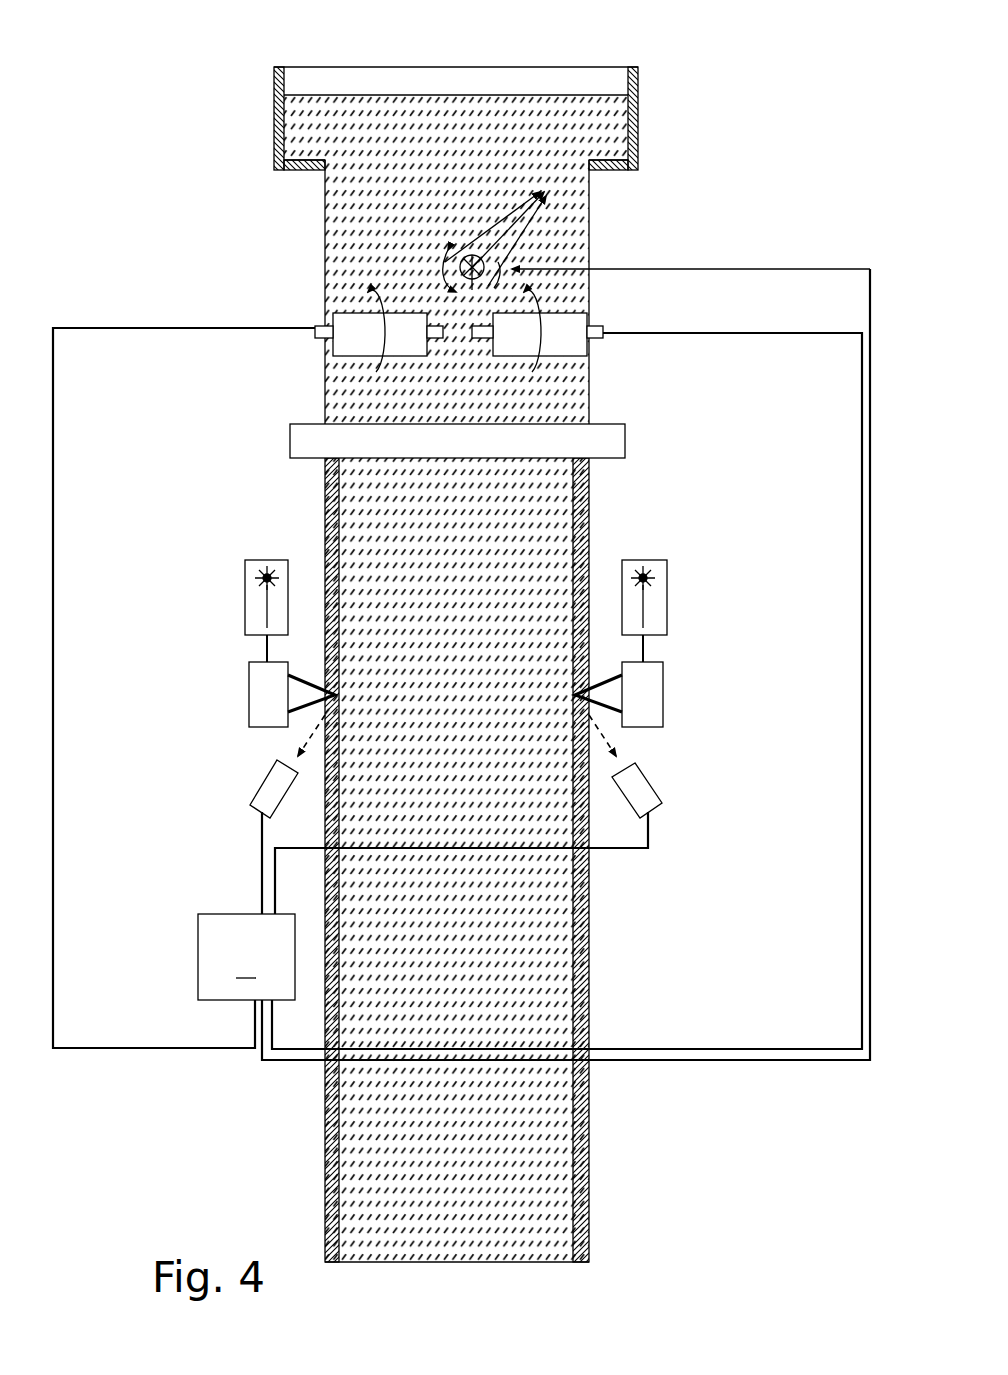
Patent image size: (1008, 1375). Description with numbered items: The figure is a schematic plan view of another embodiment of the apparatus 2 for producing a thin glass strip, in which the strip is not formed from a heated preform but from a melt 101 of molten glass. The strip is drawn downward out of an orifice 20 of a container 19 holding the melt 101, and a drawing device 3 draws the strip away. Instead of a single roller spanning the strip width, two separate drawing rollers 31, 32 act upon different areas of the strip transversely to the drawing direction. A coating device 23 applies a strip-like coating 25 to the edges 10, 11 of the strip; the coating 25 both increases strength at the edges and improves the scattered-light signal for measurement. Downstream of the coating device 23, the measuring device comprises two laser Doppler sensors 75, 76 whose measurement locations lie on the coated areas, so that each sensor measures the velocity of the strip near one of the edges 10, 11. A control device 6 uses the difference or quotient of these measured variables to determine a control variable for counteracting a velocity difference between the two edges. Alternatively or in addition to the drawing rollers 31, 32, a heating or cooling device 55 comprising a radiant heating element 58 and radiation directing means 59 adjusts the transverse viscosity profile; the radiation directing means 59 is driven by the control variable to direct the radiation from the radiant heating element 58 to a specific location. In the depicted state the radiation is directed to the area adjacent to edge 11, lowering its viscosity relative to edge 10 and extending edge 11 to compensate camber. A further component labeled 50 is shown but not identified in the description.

The apparatus 2 is at (788, 204).
The drawing device 3 is at (176, 289).
The control device 6 is at (461, 664).
The edge 10 is at (325, 283).
The edge 11 is at (590, 310).
The container 19 is at (398, 85).
The orifice 20 is at (565, 178).
The coating device 23 is at (290, 445).
The coating 25 is at (575, 1092).
The drawing roller 31 is at (345, 347).
The drawing roller 32 is at (555, 355).
The feed container assembly 50 is at (356, 85).
The heating or cooling device 55 is at (398, 239).
The radiant heating element 58 is at (490, 262).
The radiation directing means 59 is at (435, 262).
The laser Doppler sensor 75 is at (205, 692).
The laser Doppler sensor 76 is at (540, 692).
The melt 101 is at (570, 110).